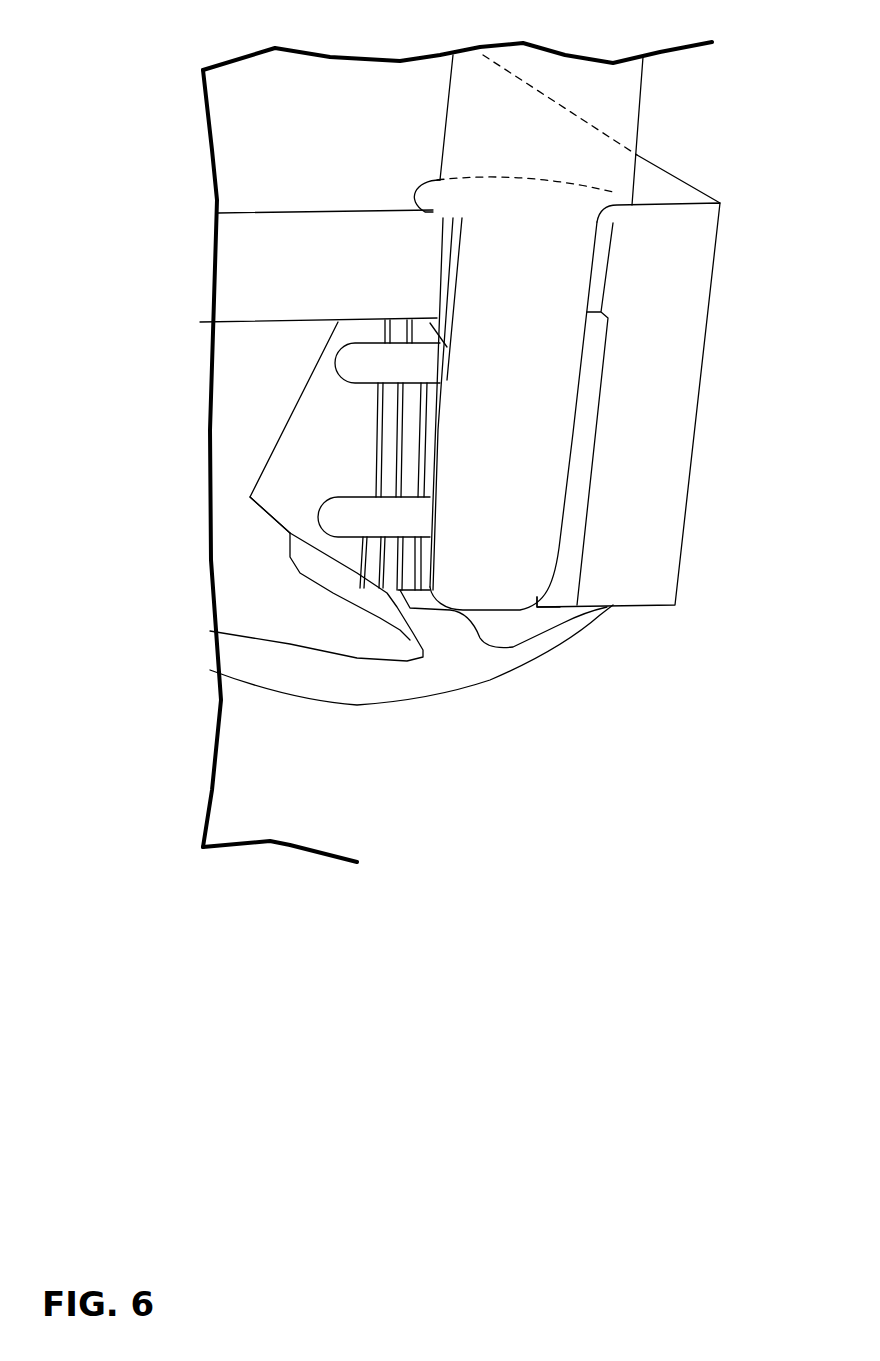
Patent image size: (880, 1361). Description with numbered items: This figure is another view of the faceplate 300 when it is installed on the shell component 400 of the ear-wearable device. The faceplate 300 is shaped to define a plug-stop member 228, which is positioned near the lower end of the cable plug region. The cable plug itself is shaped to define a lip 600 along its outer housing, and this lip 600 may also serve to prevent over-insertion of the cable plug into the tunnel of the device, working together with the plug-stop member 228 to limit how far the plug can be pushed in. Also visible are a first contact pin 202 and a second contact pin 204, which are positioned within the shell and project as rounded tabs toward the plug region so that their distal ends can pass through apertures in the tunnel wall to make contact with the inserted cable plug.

The faceplate 300 is at (243, 118).
The lip 600 is at (600, 217).
The first contact pin 202 is at (373, 367).
The second contact pin 204 is at (345, 517).
The shell component 400 is at (232, 593).
The plug-stop member 228 is at (553, 597).